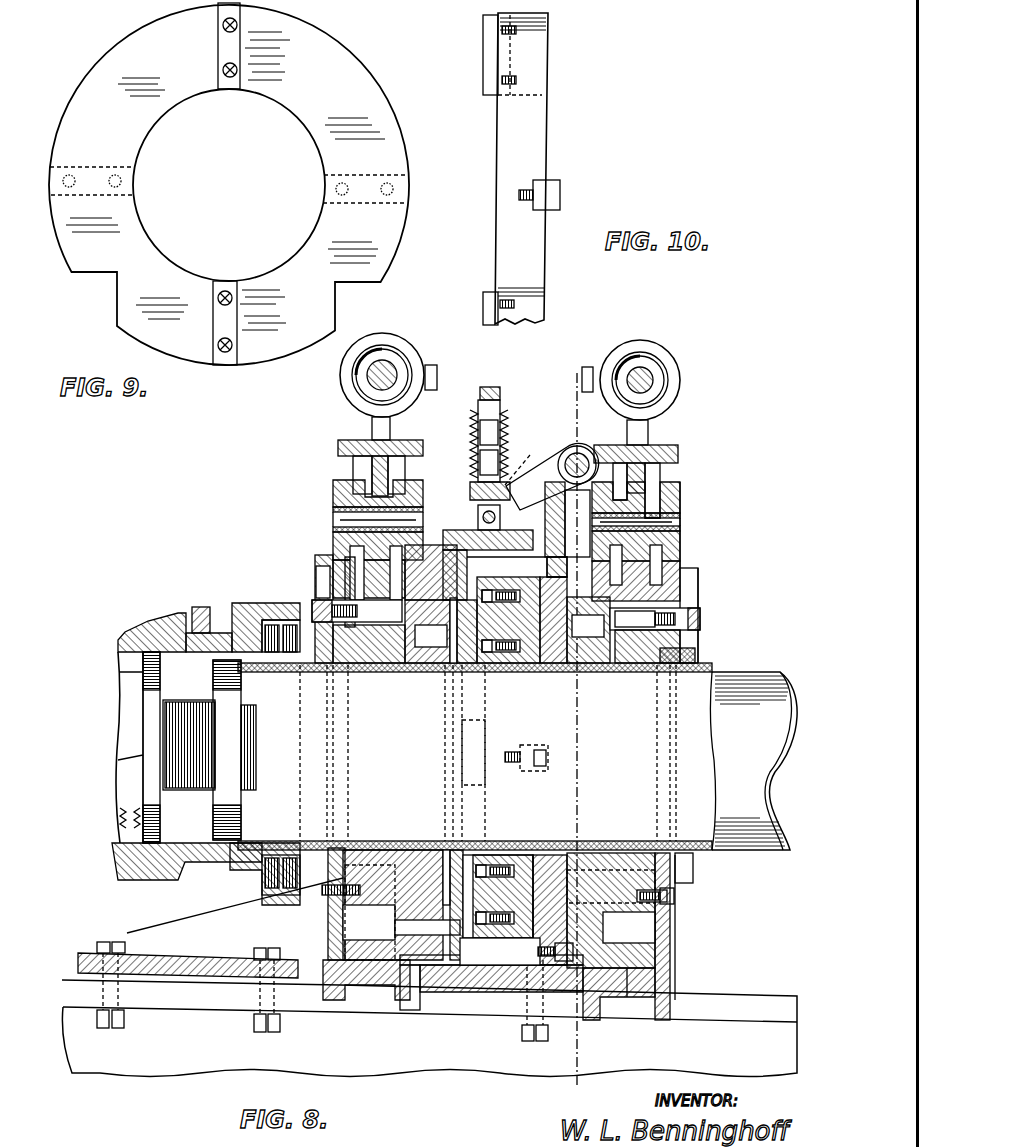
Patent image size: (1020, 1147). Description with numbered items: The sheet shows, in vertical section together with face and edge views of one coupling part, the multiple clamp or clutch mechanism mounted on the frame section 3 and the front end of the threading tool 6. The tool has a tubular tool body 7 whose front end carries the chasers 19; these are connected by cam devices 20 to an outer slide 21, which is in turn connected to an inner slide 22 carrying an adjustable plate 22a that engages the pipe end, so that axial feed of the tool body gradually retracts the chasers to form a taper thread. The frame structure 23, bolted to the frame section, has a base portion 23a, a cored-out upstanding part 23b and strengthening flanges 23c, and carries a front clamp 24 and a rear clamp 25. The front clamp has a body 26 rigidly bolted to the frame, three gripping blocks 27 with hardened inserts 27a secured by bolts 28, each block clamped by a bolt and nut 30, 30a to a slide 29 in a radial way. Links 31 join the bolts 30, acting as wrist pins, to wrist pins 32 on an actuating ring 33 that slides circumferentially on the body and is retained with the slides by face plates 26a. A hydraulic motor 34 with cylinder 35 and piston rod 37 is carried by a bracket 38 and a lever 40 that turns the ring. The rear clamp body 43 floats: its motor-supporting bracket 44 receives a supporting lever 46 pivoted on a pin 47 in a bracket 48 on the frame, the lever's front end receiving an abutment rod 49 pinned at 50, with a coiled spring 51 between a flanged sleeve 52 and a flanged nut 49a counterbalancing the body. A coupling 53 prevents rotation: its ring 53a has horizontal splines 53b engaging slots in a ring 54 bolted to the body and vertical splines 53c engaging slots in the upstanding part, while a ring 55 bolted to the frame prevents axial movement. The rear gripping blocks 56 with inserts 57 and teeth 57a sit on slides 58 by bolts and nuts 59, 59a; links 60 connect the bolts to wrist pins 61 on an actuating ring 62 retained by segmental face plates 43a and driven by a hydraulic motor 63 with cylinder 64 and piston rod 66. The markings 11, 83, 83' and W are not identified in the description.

In FIG. 8, the frame section 3 is at (410, 1076).
In FIG. 8, the tool 6 is at (186, 610).
In FIG. 8, the tool body 7 is at (120, 642).
In FIG. 8, the section line 11- 11 is at (577, 375).
In FIG. 8, the chasers 19 is at (296, 668).
In FIG. 8, the cam devices 20 is at (256, 612).
In FIG. 8, the outer slide 21 is at (202, 606).
In FIG. 8, the inner slide 22 is at (152, 700).
In FIG. 8, the adjustable plate 22a is at (238, 808).
In FIG. 8, the frame structure 23 is at (455, 535).
In FIG. 8, the base portion 23a is at (168, 978).
In FIG. 8, the upstanding part 23b is at (466, 545).
In FIG. 8, the strengthening flanges 23c is at (168, 935).
In FIG. 8, the front clamp 24 is at (338, 565).
In FIG. 8, the rear clamp 25 is at (700, 488).
In FIG. 8, the body part 26 is at (372, 1024).
In FIG. 8, the face plates 26a is at (332, 934).
In FIG. 8, the pipe gripping blocks 27 is at (333, 568).
In FIG. 8, the removable inserts 27a is at (322, 670).
In FIG. 8, the bolts 28 is at (340, 690).
In FIG. 8, the slides 29 is at (398, 665).
In FIG. 8, the clamping bolt 30 is at (346, 668).
In FIG. 8, the nut 30a is at (322, 602).
In FIG. 8, the links 31 is at (407, 592).
In FIG. 8, the wrist pins 32 is at (336, 522).
In FIG. 8, the actuating ring 33 is at (340, 487).
In FIG. 8, the hydraulic motor 34 is at (418, 345).
In FIG. 8, the cylinder 35 is at (342, 376).
In FIG. 8, the piston rod 37 is at (398, 370).
In FIG. 8, the bracket 38 is at (350, 445).
In FIG. 8, the lever 40 is at (392, 430).
In FIG. 8, the body member 43 is at (645, 1000).
In FIG. 8, the segmental face plates 43a is at (676, 930).
In FIG. 8, the motor-supporting bracket 44 is at (680, 452).
In FIG. 8, the supporting lever 46 is at (552, 460).
In FIG. 8, the pivot pin 47 is at (584, 462).
In FIG. 8, the bracket 48 is at (512, 478).
In FIG. 8, the abutment rod 49 is at (490, 387).
In FIG. 8, the flanged nut 49a is at (478, 404).
In FIG. 8, the pin 50 is at (500, 517).
In FIG. 8, the coiled spring 51 is at (478, 432).
In FIG. 8, the flanged sleeve 52 is at (478, 458).
In FIG. 9, the coupling 53 is at (387, 87).
In FIG. 10, the coupling 53 is at (556, 98).
In FIG. 8, the coupling 53 is at (520, 714).
In FIG. 9, the ring 53a is at (378, 229).
In FIG. 10, the ring 53a is at (537, 135).
In FIG. 8, the ring 53a is at (501, 757).
In FIG. 9, the horizontal splines 53b is at (88, 167).
In FIG. 10, the horizontal splines 53b is at (560, 186).
In FIG. 8, the horizontal splines 53b is at (548, 768).
In FIG. 9, the vertical splines 53c is at (240, 35).
In FIG. 10, the vertical splines 53c is at (485, 46).
In FIG. 8, the vertical splines 53c is at (516, 951).
In FIG. 8, the ring 54 is at (550, 771).
In FIG. 8, the ring 55 is at (620, 910).
In FIG. 8, the gripping blocks 56 is at (700, 568).
In FIG. 8, the insert members 57 is at (700, 652).
In FIG. 8, the pipe-engaging teeth 57a is at (700, 680).
In FIG. 8, the slides 58 is at (600, 668).
In FIG. 8, the clamping bolts 59 is at (703, 618).
In FIG. 8, the nuts 59a is at (702, 602).
In FIG. 8, the links 60 is at (588, 630).
In FIG. 8, the wrist pins 61 is at (682, 526).
In FIG. 8, the actuating ring 62 is at (682, 500).
In FIG. 8, the hydraulic actuating motor 63 is at (682, 360).
In FIG. 8, the cylinder 64 is at (650, 356).
In FIG. 8, the piston rod 66 is at (654, 380).
In FIG. 8, the stop 83 is at (451, 373).
In FIG. 8, the stop 83' is at (593, 359).
In FIG. 8, the workpiece W is at (748, 850).